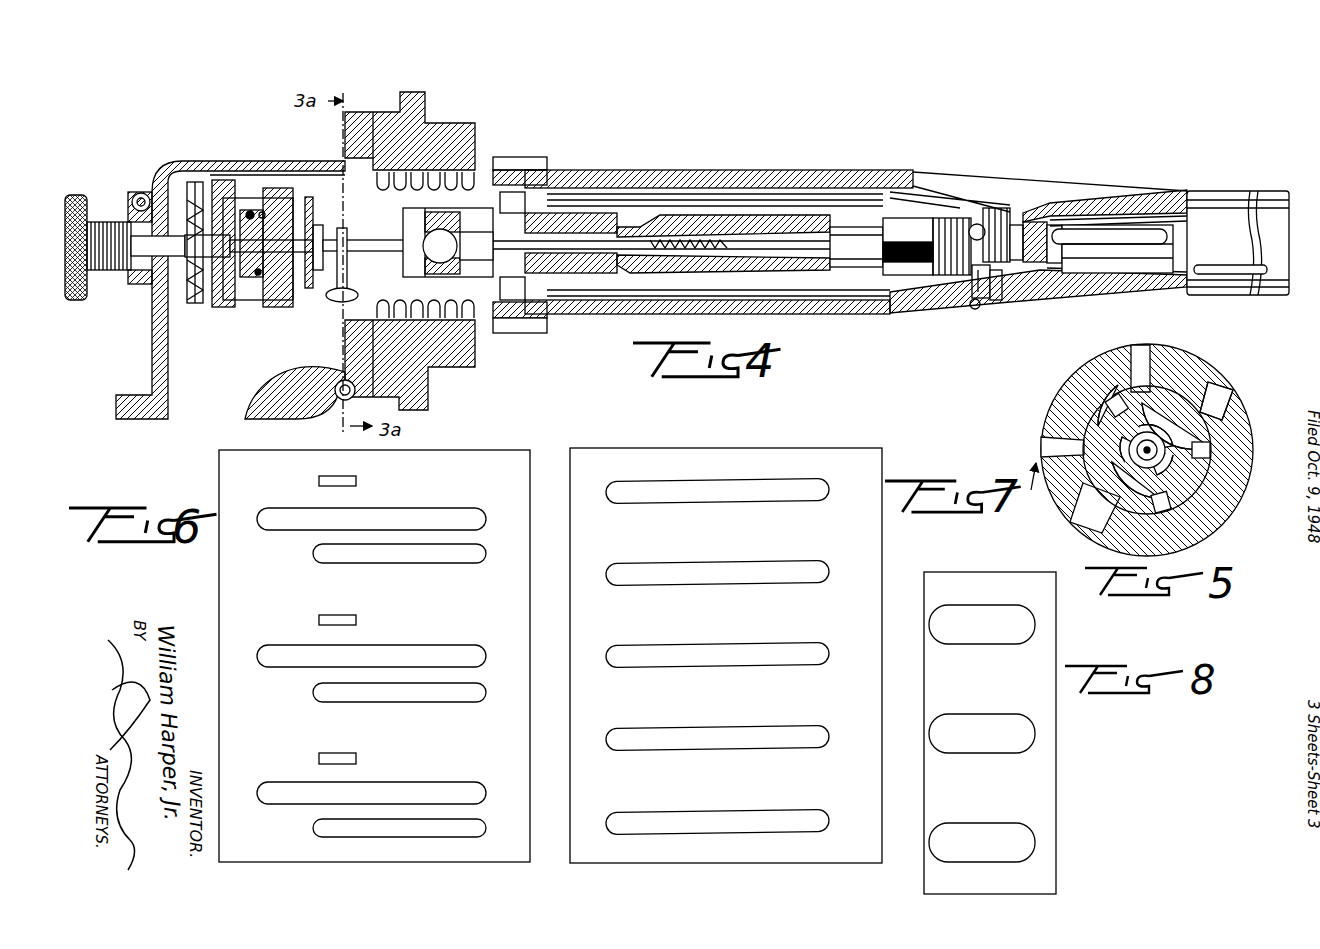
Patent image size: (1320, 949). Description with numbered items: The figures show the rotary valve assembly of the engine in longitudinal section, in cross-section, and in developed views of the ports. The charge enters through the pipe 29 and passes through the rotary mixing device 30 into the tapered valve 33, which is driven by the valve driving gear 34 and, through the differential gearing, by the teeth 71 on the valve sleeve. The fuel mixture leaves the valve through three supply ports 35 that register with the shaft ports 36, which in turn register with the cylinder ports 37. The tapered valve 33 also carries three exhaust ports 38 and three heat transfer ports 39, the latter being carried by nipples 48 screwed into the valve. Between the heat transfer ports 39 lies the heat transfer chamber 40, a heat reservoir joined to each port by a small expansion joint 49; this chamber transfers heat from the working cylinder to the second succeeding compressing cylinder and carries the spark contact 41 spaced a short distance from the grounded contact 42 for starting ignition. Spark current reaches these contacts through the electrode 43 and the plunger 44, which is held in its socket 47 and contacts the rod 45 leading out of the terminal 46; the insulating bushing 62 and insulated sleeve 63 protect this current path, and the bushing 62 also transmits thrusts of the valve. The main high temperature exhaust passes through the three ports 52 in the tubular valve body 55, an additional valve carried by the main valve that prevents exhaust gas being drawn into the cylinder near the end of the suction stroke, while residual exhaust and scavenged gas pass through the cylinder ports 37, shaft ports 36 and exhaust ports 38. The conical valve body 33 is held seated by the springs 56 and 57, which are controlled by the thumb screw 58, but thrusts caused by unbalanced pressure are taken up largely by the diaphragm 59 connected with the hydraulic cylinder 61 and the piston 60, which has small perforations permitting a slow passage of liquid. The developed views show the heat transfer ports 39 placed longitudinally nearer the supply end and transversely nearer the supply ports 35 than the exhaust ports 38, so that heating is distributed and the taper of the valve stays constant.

In FIG. 4, the pipe 29 is at (218, 409).
In FIG. 4, the rotary mixing device 30 is at (515, 288).
In FIG. 4, the tapered valve 33 is at (1070, 300).
In FIG. 5, the tapered valve 33 is at (1190, 538).
In FIG. 4, the valve driving gear 34 is at (518, 163).
In FIG. 4, the supply ports 35 is at (953, 187).
In FIG. 5, the supply ports 35 is at (1129, 395).
In FIG. 6, the supply ports 35 is at (456, 519).
In FIG. 5, the shaft ports 36 is at (1235, 402).
In FIG. 7, the cylinder ports 37 is at (700, 655).
In FIG. 4, the exhaust ports 38 is at (1118, 240).
In FIG. 5, the exhaust ports 38 is at (1119, 395).
In FIG. 6, the exhaust ports 38 is at (414, 556).
In FIG. 4, the heat transfer ports 39 is at (990, 300).
In FIG. 5, the heat transfer ports 39 is at (1151, 395).
In FIG. 6, the heat transfer ports 39 is at (345, 481).
In FIG. 4, the heat transfer chamber 40 is at (990, 303).
In FIG. 5, the heat transfer chamber 40 is at (1210, 480).
In FIG. 4, the contact 41 is at (945, 277).
In FIG. 5, the contact 41 is at (1085, 398).
In FIG. 4, the grounded contact 42 is at (1053, 253).
In FIG. 4, the electrode 43 is at (735, 267).
In FIG. 4, the plunger 44 is at (370, 246).
In FIG. 4, the rod 45 is at (336, 300).
In FIG. 4, the terminal 46 is at (340, 396).
In FIG. 4, the socket 47 is at (458, 262).
In FIG. 4, the nipples 48 is at (972, 305).
In FIG. 5, the nipples 48 is at (1092, 442).
In FIG. 5, the expansion joint 49 is at (1075, 480).
In FIG. 4, the ports 52 is at (1214, 274).
In FIG. 8, the ports 52 is at (978, 732).
In FIG. 4, the tubular valve body 55 is at (1269, 296).
In FIG. 4, the spring 56 is at (273, 188).
In FIG. 4, the spring 57 is at (462, 150).
In FIG. 4, the thumb screw 58 is at (78, 195).
In FIG. 4, the diaphragm 59 is at (197, 307).
In FIG. 4, the piston 60 is at (243, 307).
In FIG. 4, the hydraulic cylinder 61 is at (283, 290).
In FIG. 4, the insulating bushing 62 is at (575, 230).
In FIG. 4, the insulated sleeve 63 is at (652, 227).
In FIG. 4, the teeth 71 is at (547, 327).